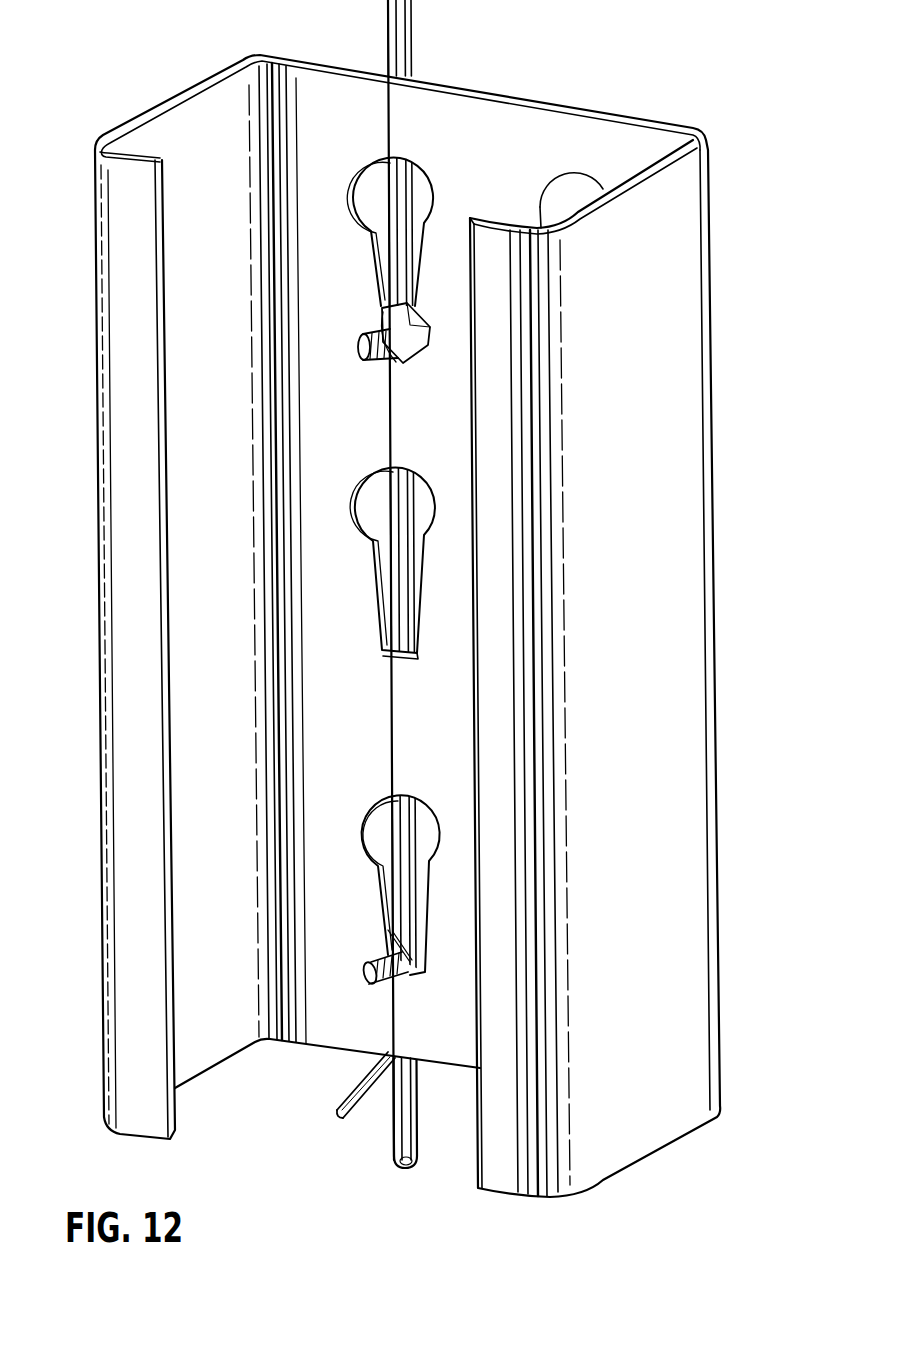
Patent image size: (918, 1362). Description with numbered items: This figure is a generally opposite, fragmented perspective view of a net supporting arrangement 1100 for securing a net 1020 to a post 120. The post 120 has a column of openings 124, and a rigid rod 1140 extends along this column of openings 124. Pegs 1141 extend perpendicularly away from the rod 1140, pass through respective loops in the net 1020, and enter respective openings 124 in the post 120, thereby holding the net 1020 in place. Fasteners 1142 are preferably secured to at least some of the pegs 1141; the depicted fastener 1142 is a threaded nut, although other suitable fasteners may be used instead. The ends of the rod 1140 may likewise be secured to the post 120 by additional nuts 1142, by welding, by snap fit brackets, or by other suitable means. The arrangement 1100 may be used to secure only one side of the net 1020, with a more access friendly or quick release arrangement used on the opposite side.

The net supporting arrangement 1100 is at (642, 54).
The post 120 is at (721, 617).
The openings 124 is at (371, 492).
The rigid rod 1140 is at (404, 38).
The pegs 1141 is at (364, 347).
The fasteners 1142 is at (405, 359).
The net 1020 is at (342, 1095).